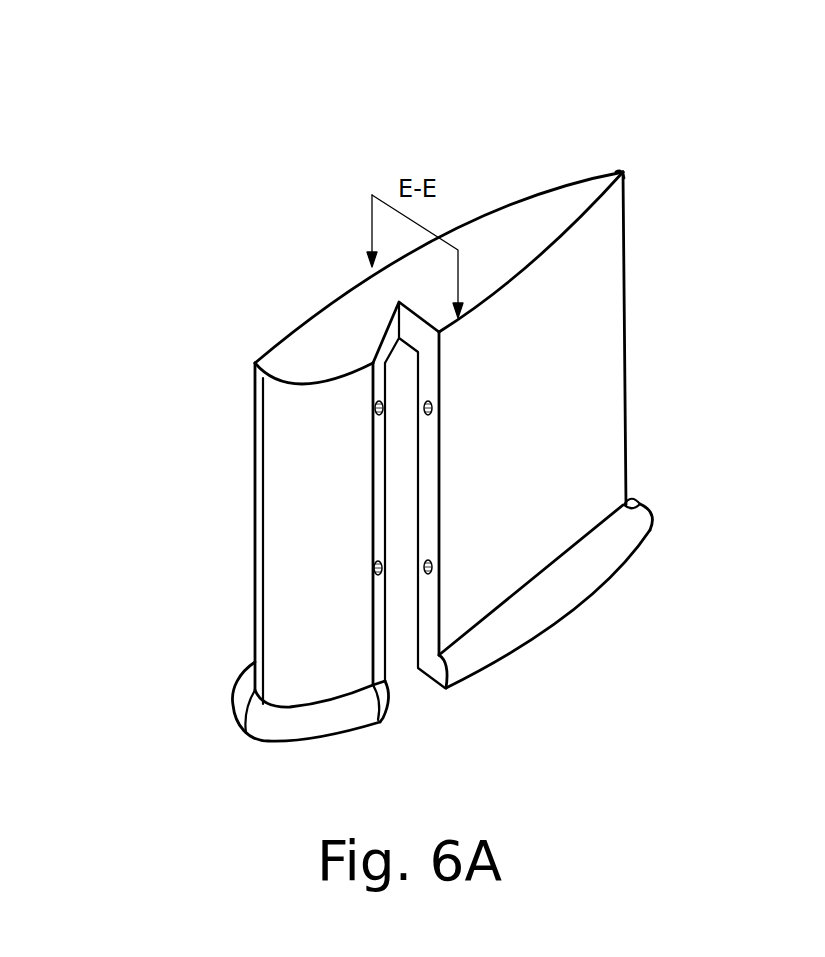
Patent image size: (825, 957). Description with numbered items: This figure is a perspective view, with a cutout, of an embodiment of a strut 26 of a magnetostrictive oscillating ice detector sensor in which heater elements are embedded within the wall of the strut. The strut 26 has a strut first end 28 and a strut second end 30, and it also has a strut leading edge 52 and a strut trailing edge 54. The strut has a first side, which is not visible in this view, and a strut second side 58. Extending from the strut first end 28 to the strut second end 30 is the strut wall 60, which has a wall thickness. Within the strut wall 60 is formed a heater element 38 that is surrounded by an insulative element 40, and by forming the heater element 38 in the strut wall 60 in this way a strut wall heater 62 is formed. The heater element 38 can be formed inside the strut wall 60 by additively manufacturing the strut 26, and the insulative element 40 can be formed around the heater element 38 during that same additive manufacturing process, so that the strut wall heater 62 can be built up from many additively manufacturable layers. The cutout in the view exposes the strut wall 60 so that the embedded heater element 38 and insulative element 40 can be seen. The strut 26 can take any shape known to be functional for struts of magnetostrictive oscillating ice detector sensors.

The strut 26 is at (255, 522).
The strut first end 28 is at (255, 698).
The strut second end 30 is at (255, 363).
The heater element 38 is at (436, 409).
The insulative element 40 is at (438, 404).
The strut leading edge 52 is at (255, 427).
The strut trailing edge 54 is at (627, 238).
The strut second side 58 is at (497, 472).
The strut wall 60 is at (430, 442).
The strut wall heater 62 is at (633, 142).